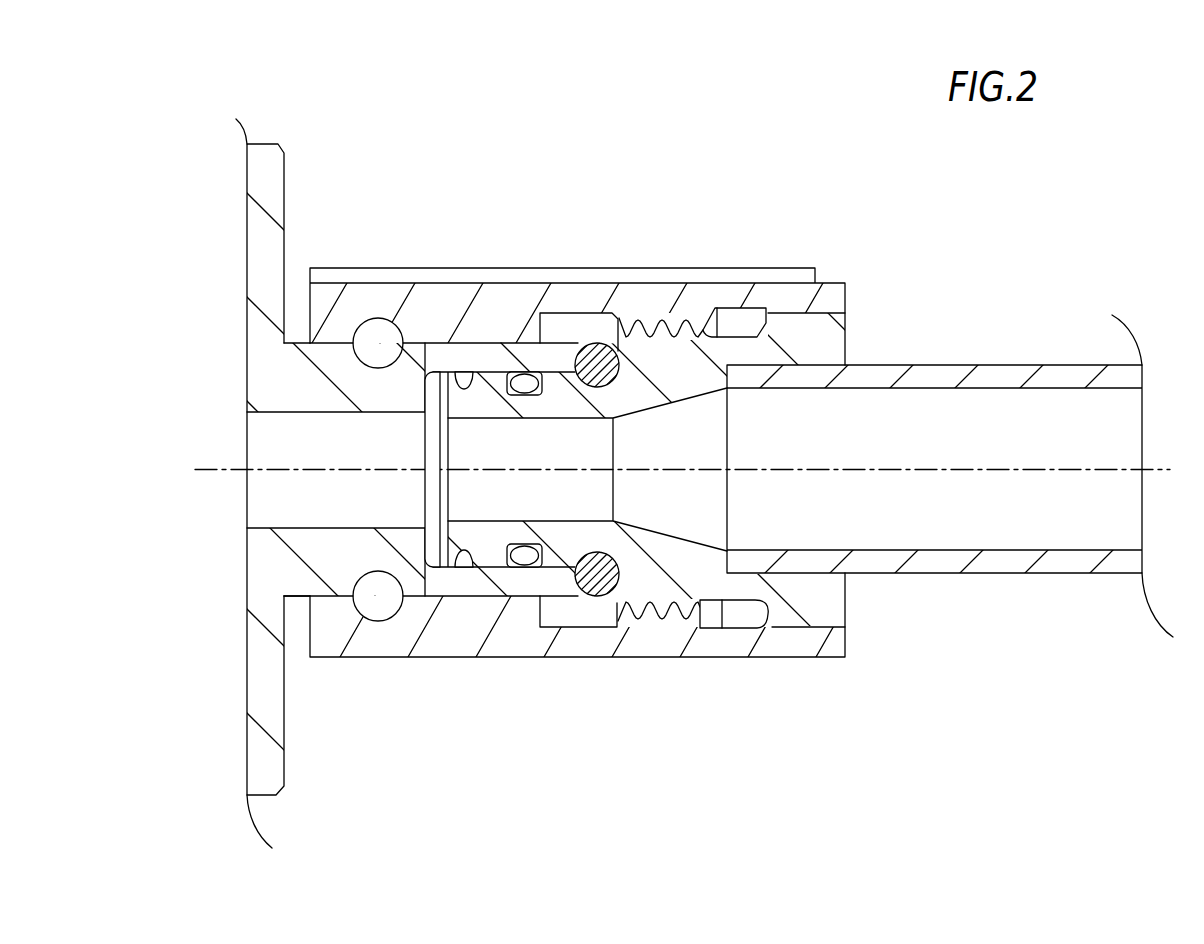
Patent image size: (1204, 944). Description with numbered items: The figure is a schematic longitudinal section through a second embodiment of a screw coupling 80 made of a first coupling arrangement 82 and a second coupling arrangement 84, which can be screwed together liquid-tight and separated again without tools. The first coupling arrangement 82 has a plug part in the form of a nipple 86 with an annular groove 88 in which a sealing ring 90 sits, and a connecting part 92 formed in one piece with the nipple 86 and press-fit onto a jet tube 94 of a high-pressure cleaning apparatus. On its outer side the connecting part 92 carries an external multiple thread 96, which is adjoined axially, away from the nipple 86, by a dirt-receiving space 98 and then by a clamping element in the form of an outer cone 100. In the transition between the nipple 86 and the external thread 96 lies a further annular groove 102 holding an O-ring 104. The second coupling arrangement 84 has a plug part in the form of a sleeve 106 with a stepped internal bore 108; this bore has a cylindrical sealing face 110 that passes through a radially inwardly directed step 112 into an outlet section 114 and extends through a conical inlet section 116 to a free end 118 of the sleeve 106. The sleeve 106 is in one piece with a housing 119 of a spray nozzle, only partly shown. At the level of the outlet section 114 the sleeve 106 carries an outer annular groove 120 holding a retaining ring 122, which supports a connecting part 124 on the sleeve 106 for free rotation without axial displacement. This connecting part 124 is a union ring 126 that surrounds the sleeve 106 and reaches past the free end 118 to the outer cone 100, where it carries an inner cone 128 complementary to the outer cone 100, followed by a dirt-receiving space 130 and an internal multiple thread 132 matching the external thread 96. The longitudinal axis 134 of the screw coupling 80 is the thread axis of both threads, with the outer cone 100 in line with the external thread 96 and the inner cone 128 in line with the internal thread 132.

The screw coupling 80 is at (752, 216).
The first coupling arrangement 82 is at (846, 337).
The second coupling arrangement 84 is at (455, 372).
The nipple 86 is at (465, 540).
The annular groove 88 is at (527, 553).
The sealing ring 90 is at (541, 602).
The connecting part 92 is at (725, 603).
The jet tube 94 is at (1003, 562).
The external multiple thread 96 is at (662, 624).
The dirt-receiving space 98 is at (767, 628).
The outer cone 100 is at (813, 627).
The further annular groove 102 is at (590, 597).
The O-ring 104 is at (606, 600).
The sleeve 106 is at (383, 325).
The stepped internal bore 108 is at (275, 412).
The cylindrical sealing face 110 is at (425, 355).
The radially inwardly directed step 112 is at (425, 417).
The outlet section 114 is at (380, 527).
The conical inlet section 116 is at (593, 343).
The free end 118 is at (620, 310).
The housing 119 is at (262, 152).
The annular groove 120 is at (362, 352).
The retaining ring 122 is at (383, 335).
The connecting part 124 is at (461, 283).
The union ring 126 is at (515, 303).
The inner cone 128 is at (776, 314).
The dirt-receiving space 130 is at (731, 310).
The internal multiple thread 132 is at (667, 338).
The longitudinal axis 134 is at (214, 470).